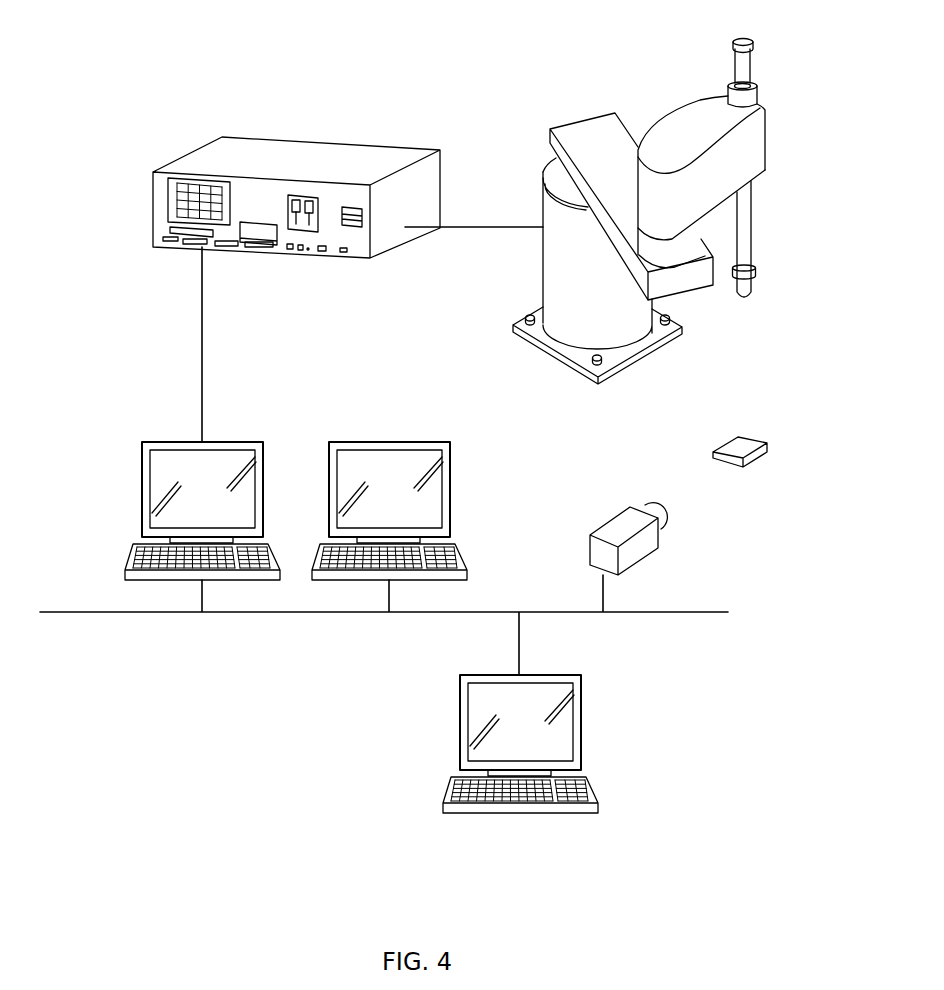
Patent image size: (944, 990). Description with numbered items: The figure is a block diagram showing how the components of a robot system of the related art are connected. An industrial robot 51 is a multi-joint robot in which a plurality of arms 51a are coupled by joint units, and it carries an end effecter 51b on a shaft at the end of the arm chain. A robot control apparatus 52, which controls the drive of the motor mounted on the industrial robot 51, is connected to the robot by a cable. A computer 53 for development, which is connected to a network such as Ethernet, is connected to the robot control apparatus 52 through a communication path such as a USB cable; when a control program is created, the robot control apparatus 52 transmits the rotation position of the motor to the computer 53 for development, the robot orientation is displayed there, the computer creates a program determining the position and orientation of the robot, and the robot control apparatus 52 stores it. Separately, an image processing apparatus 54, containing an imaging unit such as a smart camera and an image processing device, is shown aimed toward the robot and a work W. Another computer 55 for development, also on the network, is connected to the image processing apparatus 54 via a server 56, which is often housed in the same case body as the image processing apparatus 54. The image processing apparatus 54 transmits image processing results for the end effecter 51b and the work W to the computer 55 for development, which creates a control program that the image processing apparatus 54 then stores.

The industrial robot 51 is at (674, 212).
The arm 51a is at (762, 130).
The end effecter 51b is at (752, 287).
The robot control apparatus 52 is at (343, 152).
The computer for development 53 is at (242, 440).
The image processing apparatus 54 is at (617, 525).
The computer for development 55 is at (420, 440).
The server 56 is at (552, 675).
The work W is at (748, 437).